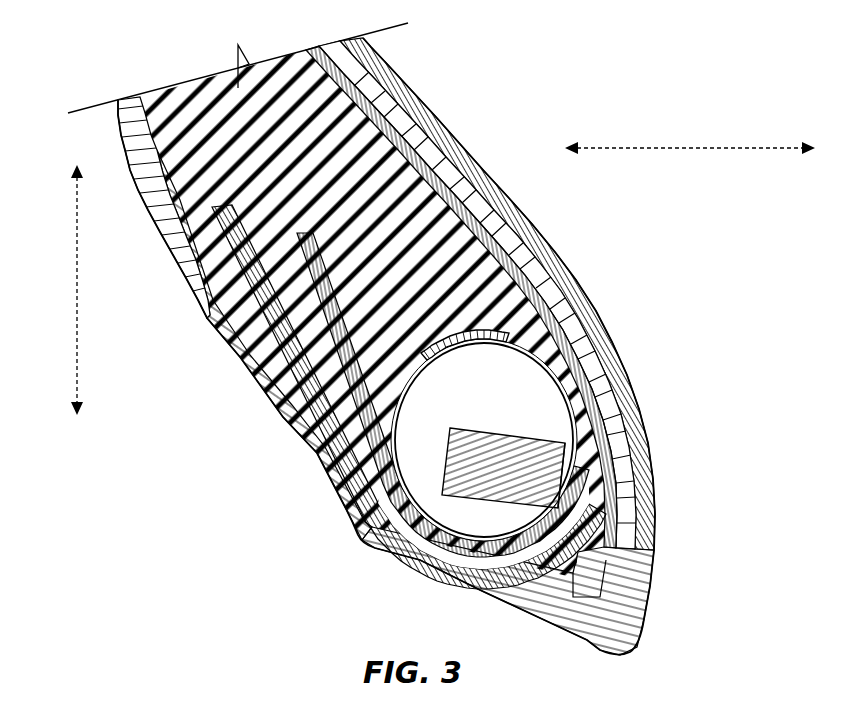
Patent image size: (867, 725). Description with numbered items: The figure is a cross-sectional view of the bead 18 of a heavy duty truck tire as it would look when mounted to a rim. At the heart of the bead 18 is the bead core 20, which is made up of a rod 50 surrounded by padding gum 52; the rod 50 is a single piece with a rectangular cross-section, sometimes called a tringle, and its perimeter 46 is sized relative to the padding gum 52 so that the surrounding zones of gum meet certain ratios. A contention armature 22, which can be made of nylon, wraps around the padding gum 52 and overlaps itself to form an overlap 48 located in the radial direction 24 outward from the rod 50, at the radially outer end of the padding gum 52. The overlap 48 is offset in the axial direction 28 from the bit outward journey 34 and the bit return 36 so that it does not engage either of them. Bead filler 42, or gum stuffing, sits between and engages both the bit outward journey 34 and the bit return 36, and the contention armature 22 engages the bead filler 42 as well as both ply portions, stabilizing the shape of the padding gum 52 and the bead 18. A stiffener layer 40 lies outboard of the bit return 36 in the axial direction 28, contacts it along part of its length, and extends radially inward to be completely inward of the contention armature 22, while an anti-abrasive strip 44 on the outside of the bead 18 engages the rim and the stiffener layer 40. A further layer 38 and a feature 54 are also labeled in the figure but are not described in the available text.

The bead 18 is at (550, 47).
The bead core 20 is at (537, 383).
The contention armature 22 is at (600, 500).
The radial direction 24 is at (77, 292).
The axial direction 28 is at (690, 148).
The bit outward journey 34 is at (487, 253).
The bit return 36 is at (350, 343).
The outer cover layer 38 is at (567, 280).
The stiffener layer 40 is at (303, 333).
The bead filler 42 is at (396, 264).
The anti-abrasive strip 44 is at (388, 533).
The perimeter 46 is at (472, 428).
The overlap 48 is at (433, 337).
The rod 50 is at (560, 452).
The padding gum 52 is at (602, 412).
The cap top surface 54 is at (460, 333).